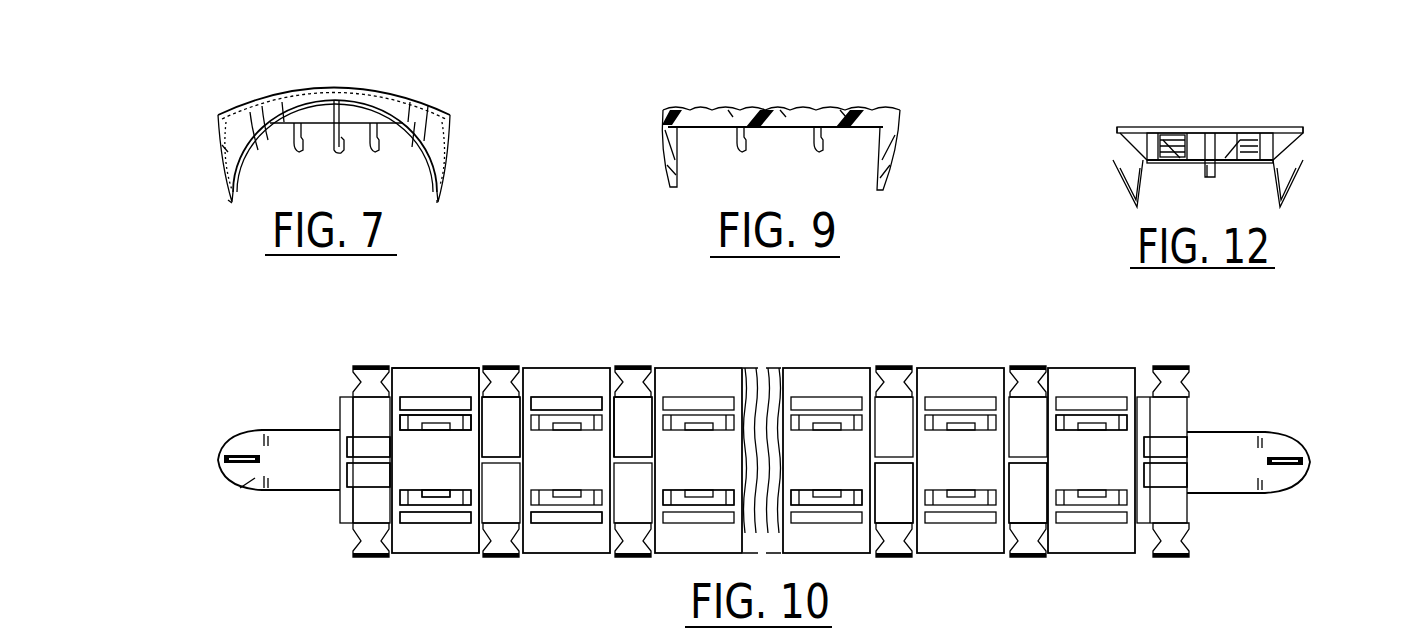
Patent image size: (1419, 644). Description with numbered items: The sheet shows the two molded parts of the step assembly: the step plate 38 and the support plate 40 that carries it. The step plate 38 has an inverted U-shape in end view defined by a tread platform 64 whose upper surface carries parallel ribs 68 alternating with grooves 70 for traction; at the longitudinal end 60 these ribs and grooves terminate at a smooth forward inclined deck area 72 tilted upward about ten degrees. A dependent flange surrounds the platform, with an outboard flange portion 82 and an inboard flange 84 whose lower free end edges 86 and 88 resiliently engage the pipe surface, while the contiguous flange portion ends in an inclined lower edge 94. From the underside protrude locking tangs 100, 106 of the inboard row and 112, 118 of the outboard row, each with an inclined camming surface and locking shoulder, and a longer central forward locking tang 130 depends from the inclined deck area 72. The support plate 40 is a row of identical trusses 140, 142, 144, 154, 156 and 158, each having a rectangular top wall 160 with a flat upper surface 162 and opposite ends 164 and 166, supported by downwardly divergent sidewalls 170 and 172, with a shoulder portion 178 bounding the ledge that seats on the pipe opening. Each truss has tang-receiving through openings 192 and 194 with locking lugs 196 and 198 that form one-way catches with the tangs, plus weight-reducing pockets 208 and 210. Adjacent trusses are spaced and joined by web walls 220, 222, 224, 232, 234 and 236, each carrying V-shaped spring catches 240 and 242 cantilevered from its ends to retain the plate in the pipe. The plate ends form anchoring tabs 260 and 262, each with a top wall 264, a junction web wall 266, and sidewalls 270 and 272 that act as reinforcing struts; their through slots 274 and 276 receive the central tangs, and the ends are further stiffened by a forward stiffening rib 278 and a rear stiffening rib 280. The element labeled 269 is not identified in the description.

In FIG. 7, the step plate 38 is at (455, 112).
In FIG. 9, the step plate 38 is at (900, 118).
In FIG. 12, the support plate 40 is at (1317, 123).
In FIG. 10, the support plate 40 is at (727, 365).
In FIG. 7, the longitudinal end 60 is at (338, 97).
In FIG. 9, the tread platform 64 is at (733, 112).
In FIG. 9, the ribs 68 is at (808, 108).
In FIG. 9, the grooves 70 is at (862, 110).
In FIG. 7, the forward inclined deck area 72 is at (313, 108).
In FIG. 7, the outboard flange portion 82 is at (457, 145).
In FIG. 9, the outboard flange portion 82 is at (660, 140).
In FIG. 7, the inboard flange 84 is at (223, 163).
In FIG. 9, the inboard flange 84 is at (893, 150).
In FIG. 7, the lower free end edge 86 is at (437, 193).
In FIG. 7, the lower free end edge 88 is at (228, 202).
In FIG. 7, the lower edge 94 is at (222, 147).
In FIG. 7, the locking tang 100 is at (375, 153).
In FIG. 9, the locking tang 106 is at (820, 153).
In FIG. 7, the locking tang 112 is at (298, 153).
In FIG. 9, the locking tang 118 is at (737, 147).
In FIG. 7, the forward central locking tang 130 is at (340, 153).
In FIG. 12, the truss 140 is at (1133, 124).
In FIG. 10, the truss 140 is at (435, 547).
In FIG. 10, the truss 142 is at (567, 553).
In FIG. 10, the truss 144 is at (695, 553).
In FIG. 10, the truss 154 is at (848, 553).
In FIG. 10, the truss 156 is at (970, 553).
In FIG. 10, the truss 158 is at (1093, 553).
In FIG. 10, the top wall 160 is at (427, 365).
In FIG. 12, the upper surface 162 is at (1162, 123).
In FIG. 10, the upper surface 162 is at (412, 471).
In FIG. 12, the longitudinal end 164 is at (1117, 130).
In FIG. 10, the longitudinal end 164 is at (455, 365).
In FIG. 12, the longitudinal end 166 is at (1307, 130).
In FIG. 10, the longitudinal end 166 is at (460, 553).
In FIG. 10, the sidewall 170 is at (367, 523).
In FIG. 10, the sidewall 172 is at (360, 405).
In FIG. 10, the shoulder portion 178 is at (498, 445).
In FIG. 10, the tang-receiving through opening 192 is at (410, 420).
In FIG. 10, the tang-receiving through opening 194 is at (420, 497).
In FIG. 10, the locking lug 196 is at (425, 423).
In FIG. 10, the locking lug 198 is at (430, 495).
In FIG. 10, the weight-reducing pocket 208 is at (560, 400).
In FIG. 10, the weight-reducing pocket 210 is at (583, 520).
In FIG. 10, the web wall 220 is at (514, 443).
In FIG. 10, the web wall 222 is at (645, 443).
In FIG. 10, the web wall 224 is at (745, 473).
In FIG. 10, the web wall 232 is at (772, 483).
In FIG. 10, the web wall 234 is at (902, 500).
In FIG. 10, the web wall 236 is at (1040, 490).
In FIG. 12, the spring catch 240 is at (1123, 187).
In FIG. 10, the spring catch 240 is at (356, 366).
In FIG. 12, the spring catch 242 is at (1297, 182).
In FIG. 10, the spring catch 242 is at (353, 553).
In FIG. 12, the leading end anchoring tab 260 is at (1208, 124).
In FIG. 10, the leading end anchoring tab 260 is at (230, 432).
In FIG. 10, the trailing end anchoring tab 262 is at (1273, 432).
In FIG. 10, the top wall 264 is at (250, 480).
In FIG. 10, the web wall 266 is at (363, 500).
In FIG. 10, the slot 269 is at (1167, 513).
In FIG. 12, the sidewall 270 is at (1163, 147).
In FIG. 10, the sidewall 270 is at (347, 445).
In FIG. 12, the sidewall 272 is at (1243, 155).
In FIG. 10, the sidewall 272 is at (360, 477).
In FIG. 10, the through slot 274 is at (237, 452).
In FIG. 10, the through slot 276 is at (1293, 453).
In FIG. 12, the forward stiffening rib 278 is at (1210, 177).
In FIG. 10, the forward stiffening rib 278 is at (367, 453).
In FIG. 10, the rear stiffening rib 280 is at (892, 447).